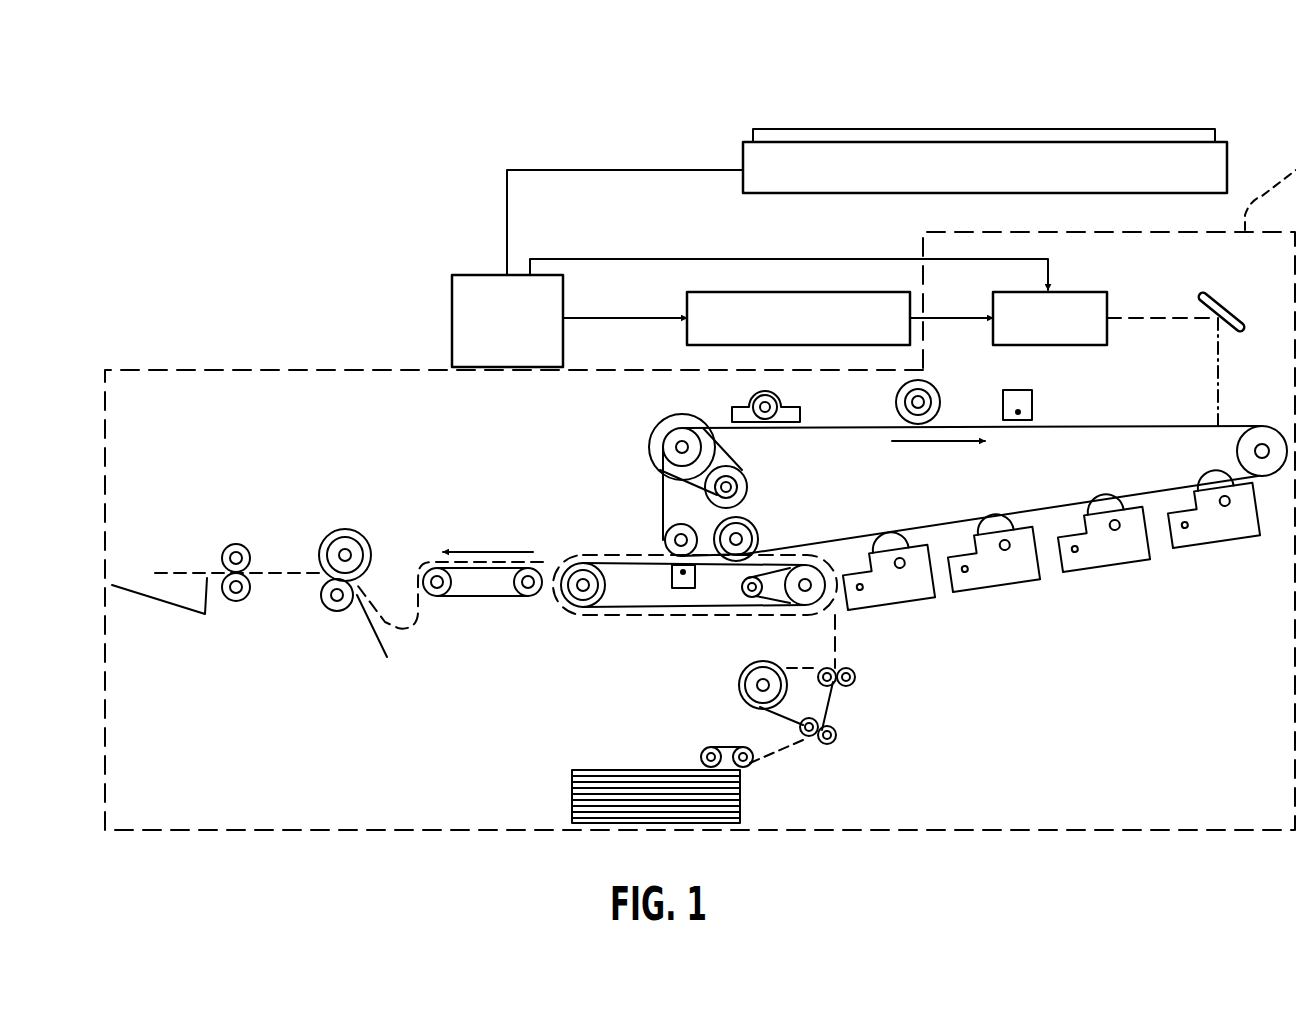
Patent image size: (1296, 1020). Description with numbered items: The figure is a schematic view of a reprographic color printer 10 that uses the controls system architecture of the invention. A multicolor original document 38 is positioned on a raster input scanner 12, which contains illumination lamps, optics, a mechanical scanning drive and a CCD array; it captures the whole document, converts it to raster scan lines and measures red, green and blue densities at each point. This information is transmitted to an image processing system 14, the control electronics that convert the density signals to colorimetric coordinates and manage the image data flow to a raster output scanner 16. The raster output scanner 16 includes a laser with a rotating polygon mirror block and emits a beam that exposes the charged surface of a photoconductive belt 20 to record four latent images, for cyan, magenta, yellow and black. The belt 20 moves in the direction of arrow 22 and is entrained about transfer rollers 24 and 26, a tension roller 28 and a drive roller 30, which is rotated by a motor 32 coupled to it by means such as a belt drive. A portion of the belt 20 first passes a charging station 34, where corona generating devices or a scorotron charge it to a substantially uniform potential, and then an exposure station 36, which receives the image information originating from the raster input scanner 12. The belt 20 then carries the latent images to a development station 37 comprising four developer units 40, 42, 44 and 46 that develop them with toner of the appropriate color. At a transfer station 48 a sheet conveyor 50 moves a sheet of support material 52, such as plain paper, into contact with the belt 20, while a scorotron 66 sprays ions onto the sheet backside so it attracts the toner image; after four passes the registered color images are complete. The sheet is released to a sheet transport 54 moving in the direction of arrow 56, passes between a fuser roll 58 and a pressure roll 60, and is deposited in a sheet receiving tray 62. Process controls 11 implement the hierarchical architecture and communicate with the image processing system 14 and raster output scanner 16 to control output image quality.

The reprographic color printer 10 is at (1003, 110).
The process controls 11 is at (1075, 292).
The raster input scanner 12 is at (743, 140).
The image processing system 14 is at (550, 272).
The raster output scanner 16 is at (805, 290).
The photoconductive belt 20 is at (1093, 424).
The arrow 22 is at (934, 444).
The transfer roller 24 is at (662, 540).
The transfer roller 26 is at (760, 532).
The tension roller 28 is at (1258, 432).
The drive roller 30 is at (660, 430).
The motor 32 is at (748, 480).
The charging station 34 is at (1036, 410).
The exposure station 36 is at (1212, 418).
The development station 37 is at (1053, 658).
The original document 38 is at (1195, 137).
The developer unit 40 is at (1215, 528).
The developer unit 42 is at (1113, 552).
The developer unit 44 is at (1006, 570).
The developer unit 46 is at (902, 590).
The transfer station 48 is at (608, 633).
The sheet conveyor 50 is at (718, 613).
The sheet of support material 52 is at (590, 770).
The sheet transport 54 is at (472, 597).
The arrow 56 is at (505, 552).
The fuser roll 58 is at (371, 555).
The pressure roll 60 is at (330, 610).
The sheet receiving tray 62 is at (153, 600).
The scorotron 66 is at (697, 582).